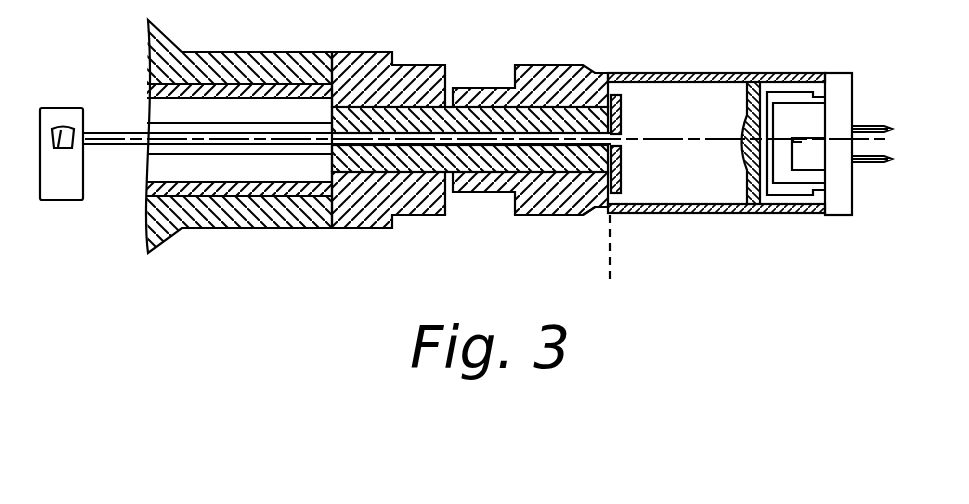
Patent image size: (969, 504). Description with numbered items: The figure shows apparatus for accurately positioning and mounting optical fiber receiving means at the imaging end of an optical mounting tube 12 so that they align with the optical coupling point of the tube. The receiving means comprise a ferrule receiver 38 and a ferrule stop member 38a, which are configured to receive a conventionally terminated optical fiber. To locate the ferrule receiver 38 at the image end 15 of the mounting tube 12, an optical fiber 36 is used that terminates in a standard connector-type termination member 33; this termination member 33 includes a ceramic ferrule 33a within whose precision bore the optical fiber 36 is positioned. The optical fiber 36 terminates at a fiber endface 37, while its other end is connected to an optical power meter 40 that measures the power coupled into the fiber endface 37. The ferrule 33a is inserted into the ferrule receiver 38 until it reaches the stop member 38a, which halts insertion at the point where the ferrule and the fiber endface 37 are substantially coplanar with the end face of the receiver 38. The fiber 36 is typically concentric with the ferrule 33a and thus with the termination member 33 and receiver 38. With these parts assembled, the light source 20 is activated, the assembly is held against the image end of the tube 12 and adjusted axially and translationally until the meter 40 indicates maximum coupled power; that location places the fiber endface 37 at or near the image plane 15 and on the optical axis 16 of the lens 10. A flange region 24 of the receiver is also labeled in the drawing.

The lens 10 is at (742, 163).
The mounting tube 12 is at (723, 213).
The image end 15 is at (618, 265).
The optical axis 16 is at (672, 142).
The light source 20 is at (837, 82).
The nut flange 24 is at (583, 206).
The termination member 33 is at (365, 52).
The ceramic ferrule 33a is at (421, 115).
The optical fiber 36 is at (492, 140).
The fiber endface 37 is at (621, 148).
The ferrule receiver 38 is at (550, 64).
The ferrule stop member 38a is at (621, 99).
The optical power meter 40 is at (65, 108).